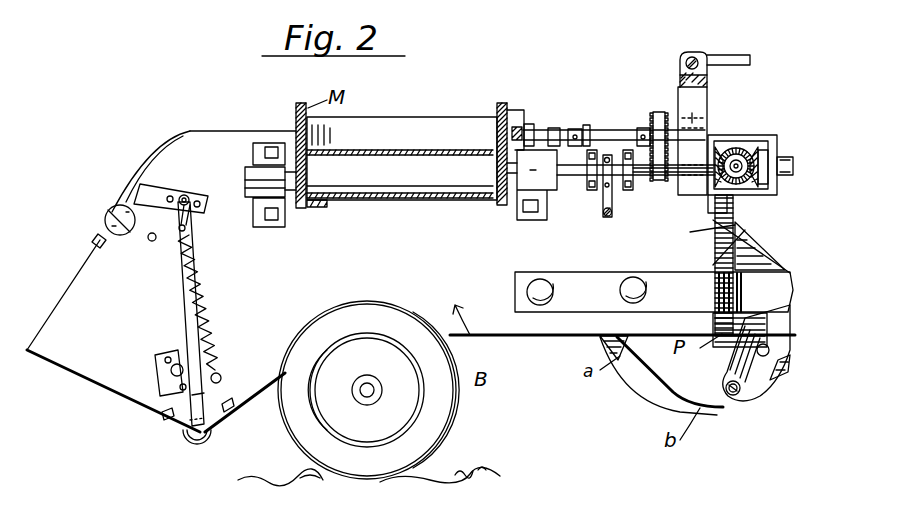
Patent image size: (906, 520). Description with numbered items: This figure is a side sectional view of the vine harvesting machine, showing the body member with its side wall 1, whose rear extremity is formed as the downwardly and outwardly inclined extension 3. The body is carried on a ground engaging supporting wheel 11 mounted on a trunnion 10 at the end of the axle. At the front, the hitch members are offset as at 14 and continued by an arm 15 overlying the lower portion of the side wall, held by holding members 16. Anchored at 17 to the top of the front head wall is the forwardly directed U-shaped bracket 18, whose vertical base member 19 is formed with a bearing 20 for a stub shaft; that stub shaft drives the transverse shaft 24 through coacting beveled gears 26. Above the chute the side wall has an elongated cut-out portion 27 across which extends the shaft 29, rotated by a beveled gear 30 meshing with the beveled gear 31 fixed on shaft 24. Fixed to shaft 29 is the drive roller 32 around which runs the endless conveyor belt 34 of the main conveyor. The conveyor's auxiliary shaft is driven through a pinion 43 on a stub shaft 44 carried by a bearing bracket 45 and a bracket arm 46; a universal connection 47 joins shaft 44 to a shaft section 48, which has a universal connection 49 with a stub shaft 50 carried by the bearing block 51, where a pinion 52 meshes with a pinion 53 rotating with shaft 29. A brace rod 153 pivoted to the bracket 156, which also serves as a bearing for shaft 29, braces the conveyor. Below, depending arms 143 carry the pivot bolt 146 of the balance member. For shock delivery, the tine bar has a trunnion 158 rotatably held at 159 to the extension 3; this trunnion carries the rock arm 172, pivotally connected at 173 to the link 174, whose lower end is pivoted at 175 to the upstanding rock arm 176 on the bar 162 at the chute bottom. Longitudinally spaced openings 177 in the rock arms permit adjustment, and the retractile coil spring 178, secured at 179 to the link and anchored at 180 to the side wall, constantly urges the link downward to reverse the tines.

The side wall 1 is at (722, 221).
The extension 3 is at (68, 300).
The trunnion 10 is at (367, 398).
The ground engaging supporting wheel 11 is at (288, 428).
The offset 14 is at (745, 262).
The arm 15 is at (784, 278).
The holding member 16 is at (527, 290).
The anchorage 17 is at (774, 320).
The bracket 18 is at (722, 135).
The base member 19 is at (787, 158).
The bearing 20 is at (764, 190).
The shaft 24 is at (738, 172).
The beveled gears 26 is at (760, 149).
The cut-out portion 27 is at (300, 128).
The shaft 29 is at (575, 190).
The beveled gear 30 is at (710, 203).
The beveled gear 31 is at (738, 150).
The drive roller 32 is at (424, 168).
The endless conveyor belt 34 is at (382, 204).
The pinion 43 is at (510, 133).
The stub shaft 44 is at (586, 125).
The bearing bracket 45 is at (513, 108).
The bracket arm 46 is at (555, 127).
The universal connection 47 is at (583, 128).
The shaft section 48 is at (614, 130).
The universal connection 49 is at (643, 127).
The stub shaft 50 is at (692, 141).
The bearing block 51 is at (688, 183).
The pinion 52 is at (659, 111).
The pinion 53 is at (647, 188).
The depending arm 143 is at (739, 405).
The pivot bolt 146 is at (725, 388).
The brace rod 153 is at (606, 219).
The bracket 156 is at (632, 188).
The trunnion 158 is at (106, 216).
The rotatable holding 159 is at (97, 240).
The bar 162 is at (198, 446).
The rock arm 172 is at (180, 186).
The pivotal connection 173 is at (192, 215).
The link 174 is at (177, 306).
The pivotal connection 175 is at (170, 372).
The rock arm 176 is at (196, 402).
The opening 177 is at (205, 207).
The retractile coil spring 178 is at (205, 300).
The spring securement 179 is at (179, 233).
The spring anchorage 180 is at (219, 372).